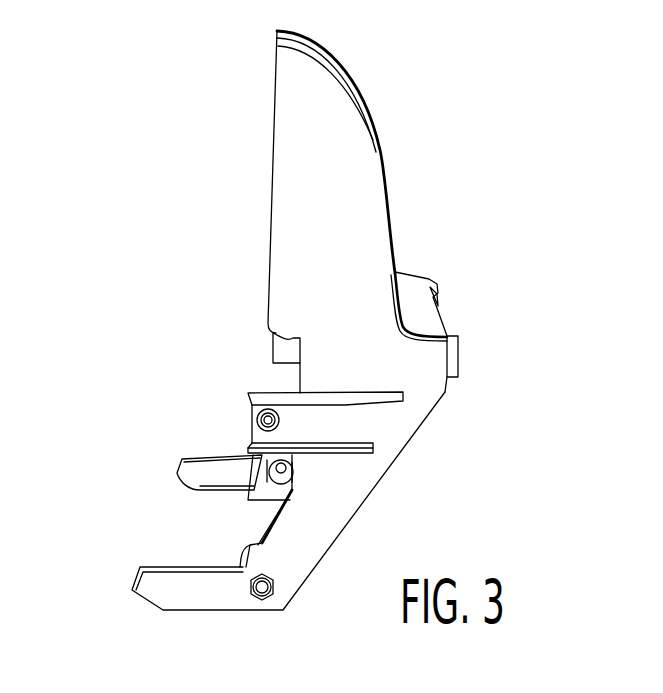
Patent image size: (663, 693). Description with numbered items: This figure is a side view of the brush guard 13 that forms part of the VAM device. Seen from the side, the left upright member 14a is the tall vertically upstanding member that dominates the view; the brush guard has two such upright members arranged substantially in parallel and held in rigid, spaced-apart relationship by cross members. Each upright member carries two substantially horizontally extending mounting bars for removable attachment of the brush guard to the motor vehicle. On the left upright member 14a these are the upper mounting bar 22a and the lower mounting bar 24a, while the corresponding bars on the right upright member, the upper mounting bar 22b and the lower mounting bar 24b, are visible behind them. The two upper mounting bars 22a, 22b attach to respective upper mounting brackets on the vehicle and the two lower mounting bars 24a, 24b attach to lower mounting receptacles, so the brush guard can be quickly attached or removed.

The brush guard 13 is at (430, 193).
The left upright member 14a is at (340, 219).
The upper mounting bar 22a is at (337, 438).
The upper mounting bar 22b is at (282, 355).
The lower mounting bar 24a is at (223, 606).
The lower mounting bar 24b is at (208, 473).